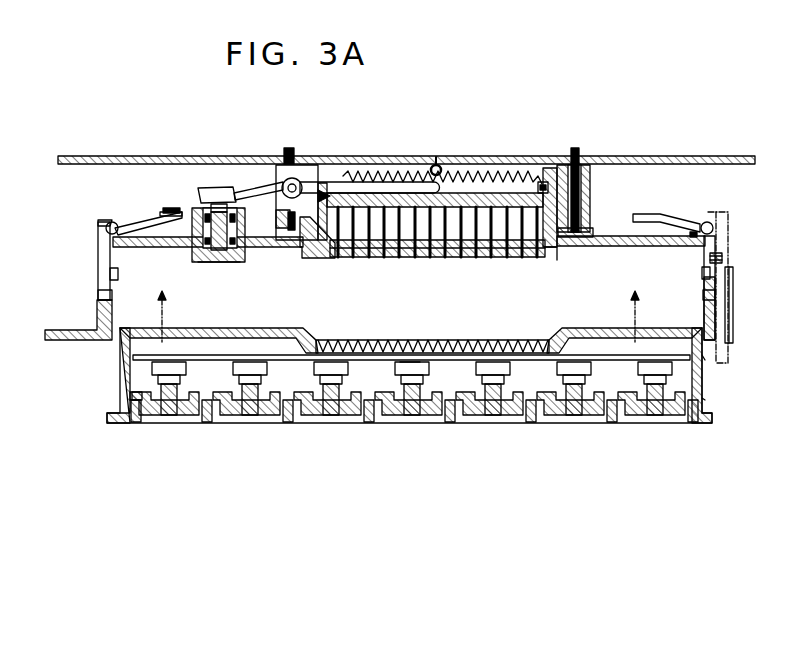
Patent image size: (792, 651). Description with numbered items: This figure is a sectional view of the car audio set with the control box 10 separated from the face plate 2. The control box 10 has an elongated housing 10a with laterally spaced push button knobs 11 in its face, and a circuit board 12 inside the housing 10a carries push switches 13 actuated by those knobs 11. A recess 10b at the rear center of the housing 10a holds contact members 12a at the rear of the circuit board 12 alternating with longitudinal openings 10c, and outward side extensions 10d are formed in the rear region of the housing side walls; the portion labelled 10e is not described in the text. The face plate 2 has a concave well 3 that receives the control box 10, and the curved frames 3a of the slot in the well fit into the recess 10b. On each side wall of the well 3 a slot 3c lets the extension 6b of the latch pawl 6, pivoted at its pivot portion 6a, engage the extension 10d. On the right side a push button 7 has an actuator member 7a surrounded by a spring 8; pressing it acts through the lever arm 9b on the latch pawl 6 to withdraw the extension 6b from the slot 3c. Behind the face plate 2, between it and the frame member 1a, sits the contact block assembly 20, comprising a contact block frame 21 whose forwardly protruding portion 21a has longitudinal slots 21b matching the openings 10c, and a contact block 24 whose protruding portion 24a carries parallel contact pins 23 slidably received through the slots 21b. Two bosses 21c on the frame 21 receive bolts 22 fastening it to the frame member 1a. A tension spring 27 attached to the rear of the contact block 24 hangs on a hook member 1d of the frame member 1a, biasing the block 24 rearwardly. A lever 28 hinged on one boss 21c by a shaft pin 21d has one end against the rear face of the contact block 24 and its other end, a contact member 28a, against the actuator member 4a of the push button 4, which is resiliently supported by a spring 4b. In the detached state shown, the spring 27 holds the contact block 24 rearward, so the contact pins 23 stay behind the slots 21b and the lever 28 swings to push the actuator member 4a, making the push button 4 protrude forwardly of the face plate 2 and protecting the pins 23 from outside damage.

The frame member 1a is at (82, 156).
The hook member 1d is at (437, 164).
The face plate 2 is at (85, 340).
The concave well 3 is at (120, 247).
The curved frames 3a is at (560, 247).
The slot 3c is at (98, 296).
The push button 4 is at (215, 263).
The actuator member 4a is at (232, 204).
The spring 4b is at (198, 264).
The latch pawl 6 is at (98, 240).
The pivot portion 6a is at (98, 222).
The extension 6b is at (118, 275).
The push button 7 is at (722, 352).
The actuator member 7a is at (733, 283).
The spring 8 is at (722, 257).
The arm 9b is at (167, 207).
The control box 10 is at (120, 398).
The elongated housing 10a is at (705, 360).
The recess 10b is at (555, 342).
The longitudinal openings 10c is at (470, 340).
The side extensions 10d is at (125, 348).
The container flange 10e is at (705, 400).
The push button knobs 11 is at (528, 415).
The circuit board 12 is at (270, 355).
The contact members 12a is at (400, 362).
The push switches 13 is at (490, 370).
The contact block assembly 20 is at (513, 198).
The contact block frame 21 is at (320, 258).
The forwardly protruding portion 21a is at (394, 257).
The longitudinal slots 21b is at (424, 257).
The bosses 21c is at (311, 182).
The shaft pin 21d is at (286, 165).
The bolts 22 is at (577, 165).
The contact pins 23 is at (358, 242).
The contact block 24 is at (473, 193).
The forwardly protruding portion 24a is at (545, 182).
The tension spring 27 is at (386, 172).
The lever 28 is at (336, 193).
The contact member 28a is at (213, 187).